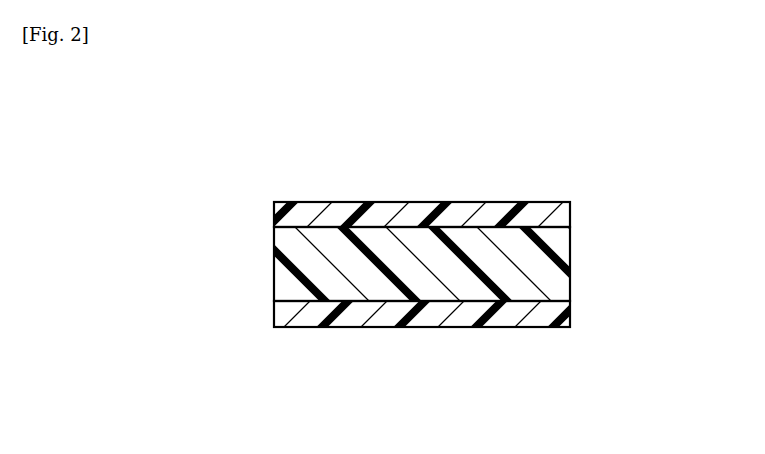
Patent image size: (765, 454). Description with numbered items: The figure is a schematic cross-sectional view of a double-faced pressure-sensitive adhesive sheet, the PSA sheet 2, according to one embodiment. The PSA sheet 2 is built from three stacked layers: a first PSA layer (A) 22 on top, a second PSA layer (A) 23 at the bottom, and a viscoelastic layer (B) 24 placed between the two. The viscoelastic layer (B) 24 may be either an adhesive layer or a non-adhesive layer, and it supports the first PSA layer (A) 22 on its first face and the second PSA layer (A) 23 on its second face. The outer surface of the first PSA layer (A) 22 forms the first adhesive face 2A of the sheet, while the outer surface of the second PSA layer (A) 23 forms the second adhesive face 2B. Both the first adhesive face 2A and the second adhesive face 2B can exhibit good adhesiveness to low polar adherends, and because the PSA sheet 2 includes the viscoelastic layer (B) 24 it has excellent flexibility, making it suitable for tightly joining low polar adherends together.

The PSA sheet 2 is at (305, 183).
The first PSA layer (A) 22 is at (569, 214).
The viscoelastic layer (B) 24 is at (569, 278).
The second PSA layer (A) 23 is at (570, 320).
The first surface (first adhesive face) 2A is at (515, 202).
The second surface (second adhesive face) 2B is at (500, 327).